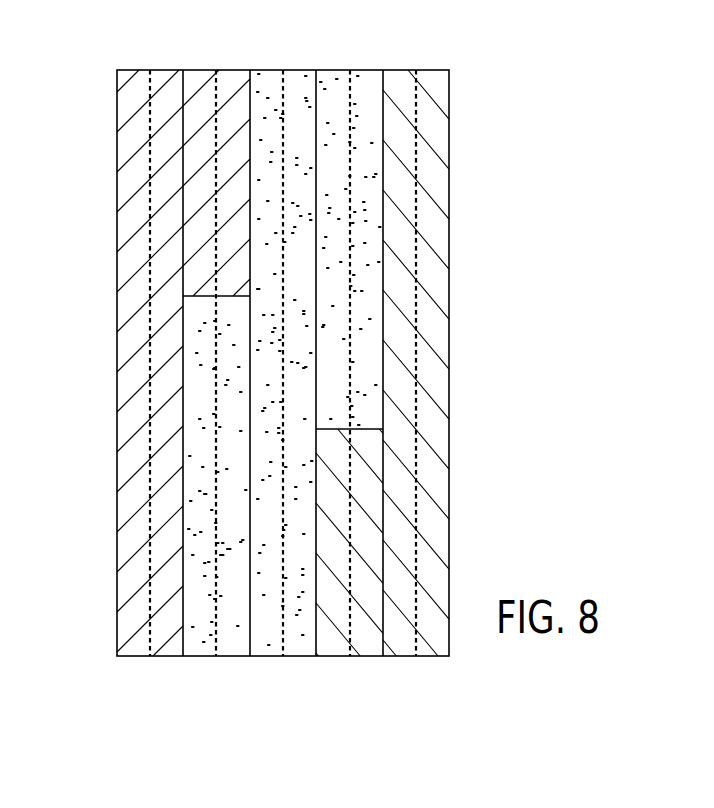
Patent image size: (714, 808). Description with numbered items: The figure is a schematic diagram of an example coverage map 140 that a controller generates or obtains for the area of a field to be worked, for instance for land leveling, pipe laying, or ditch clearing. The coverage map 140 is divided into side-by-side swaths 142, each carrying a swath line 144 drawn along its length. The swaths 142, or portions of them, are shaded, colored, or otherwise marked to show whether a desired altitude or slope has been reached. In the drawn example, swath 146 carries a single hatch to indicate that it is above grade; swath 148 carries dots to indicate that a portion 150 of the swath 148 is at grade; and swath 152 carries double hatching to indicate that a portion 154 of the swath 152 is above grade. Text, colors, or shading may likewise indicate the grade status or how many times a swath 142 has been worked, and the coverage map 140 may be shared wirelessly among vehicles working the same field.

The coverage map 140 is at (152, 33).
The swath 142 is at (268, 70).
The swath line 144 is at (148, 282).
The swath 146 is at (117, 470).
The swath 148 is at (227, 623).
The portion 150 is at (200, 633).
The swath 152 is at (363, 623).
The portion 154 is at (328, 635).